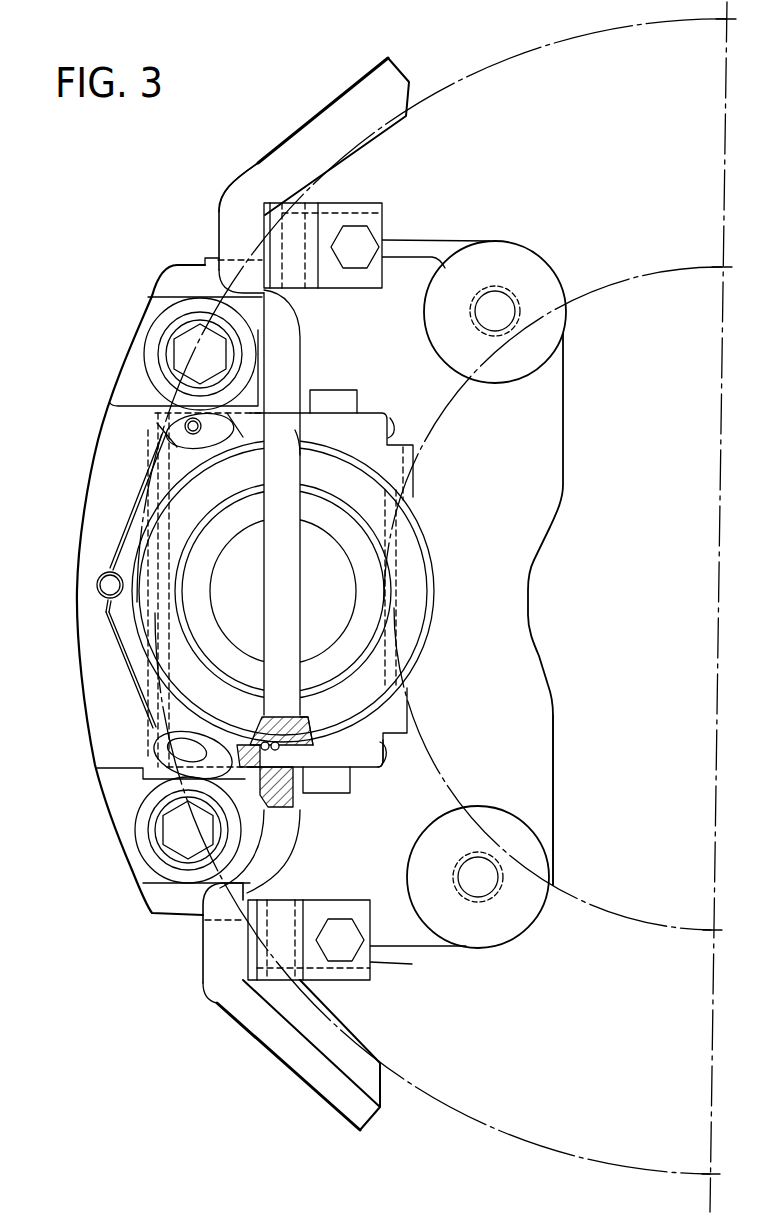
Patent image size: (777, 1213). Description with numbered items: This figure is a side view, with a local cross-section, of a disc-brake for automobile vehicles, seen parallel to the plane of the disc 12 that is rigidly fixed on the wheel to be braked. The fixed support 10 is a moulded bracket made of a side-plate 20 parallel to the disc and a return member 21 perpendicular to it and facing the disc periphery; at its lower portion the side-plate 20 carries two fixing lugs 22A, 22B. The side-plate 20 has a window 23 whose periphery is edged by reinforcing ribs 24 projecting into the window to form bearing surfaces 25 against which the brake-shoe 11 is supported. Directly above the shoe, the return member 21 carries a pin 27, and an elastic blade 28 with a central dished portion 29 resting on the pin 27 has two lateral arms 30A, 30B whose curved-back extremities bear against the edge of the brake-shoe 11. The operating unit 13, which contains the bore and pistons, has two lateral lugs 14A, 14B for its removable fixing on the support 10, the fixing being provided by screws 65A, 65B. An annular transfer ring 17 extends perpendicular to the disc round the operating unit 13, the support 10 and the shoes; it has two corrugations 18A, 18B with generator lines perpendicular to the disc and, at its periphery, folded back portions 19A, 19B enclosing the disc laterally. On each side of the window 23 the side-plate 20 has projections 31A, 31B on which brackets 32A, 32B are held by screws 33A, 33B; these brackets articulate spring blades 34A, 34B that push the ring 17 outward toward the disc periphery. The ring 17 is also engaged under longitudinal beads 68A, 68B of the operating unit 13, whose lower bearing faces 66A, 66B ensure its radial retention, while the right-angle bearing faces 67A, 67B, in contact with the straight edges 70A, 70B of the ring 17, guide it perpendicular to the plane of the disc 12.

The fixed support 10 is at (562, 748).
The brake-shoe 11 is at (380, 777).
The disc 12 is at (495, 1113).
The operating unit 13 is at (440, 655).
The lug 14A is at (163, 529).
The lug 14B is at (155, 830).
The annular transfer member or ring 17 is at (267, 578).
The corrugation 18A is at (219, 227).
The corrugation 18B is at (203, 960).
The folded back portion 19A is at (373, 77).
The folded back portion 19B is at (335, 1090).
The side-plate 20 is at (520, 597).
The return member 21 is at (105, 442).
The fixing lug 22A is at (548, 278).
The fixing lug 22B is at (540, 918).
The window 23 is at (380, 433).
The reinforcing rib 24 is at (347, 400).
The bearing surface 25 is at (352, 425).
The pin 27 is at (97, 588).
The elastic blade 28 is at (95, 626).
The central dished portion 29 is at (93, 580).
The lateral arm 30A is at (127, 510).
The lateral arm 30B is at (113, 645).
The projection 31A is at (347, 207).
The projection 31B is at (343, 990).
The bracket 32A is at (390, 220).
The bracket 32B is at (372, 978).
The screw 33A is at (430, 240).
The screw 33B is at (405, 965).
The spring blade 34A is at (258, 207).
The spring blade 34B is at (227, 1000).
The screw 65A is at (192, 350).
The screw 65B is at (173, 833).
The bearing face 66A is at (273, 432).
The bearing face 66B is at (270, 725).
The bearing face 67A is at (287, 448).
The bearing face 67B is at (270, 712).
The longitudinal bead 68A is at (283, 398).
The longitudinal bead 68B is at (290, 838).
The straight edge 70A is at (303, 457).
The straight edge 70B is at (300, 707).